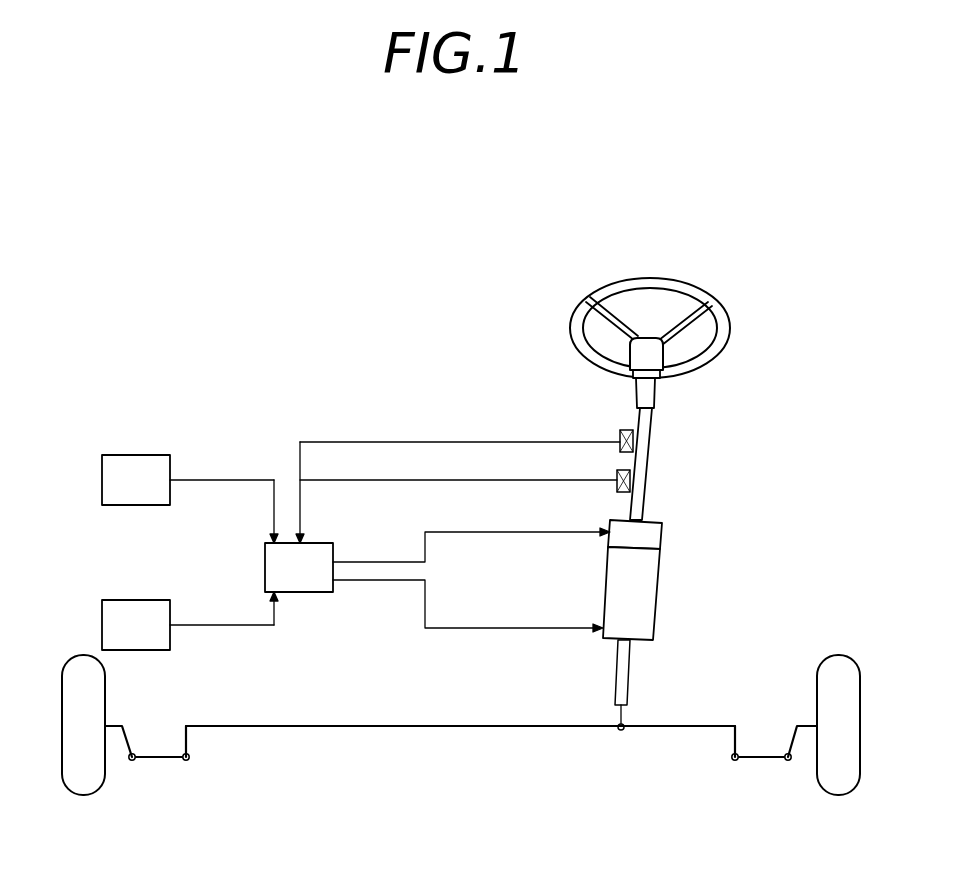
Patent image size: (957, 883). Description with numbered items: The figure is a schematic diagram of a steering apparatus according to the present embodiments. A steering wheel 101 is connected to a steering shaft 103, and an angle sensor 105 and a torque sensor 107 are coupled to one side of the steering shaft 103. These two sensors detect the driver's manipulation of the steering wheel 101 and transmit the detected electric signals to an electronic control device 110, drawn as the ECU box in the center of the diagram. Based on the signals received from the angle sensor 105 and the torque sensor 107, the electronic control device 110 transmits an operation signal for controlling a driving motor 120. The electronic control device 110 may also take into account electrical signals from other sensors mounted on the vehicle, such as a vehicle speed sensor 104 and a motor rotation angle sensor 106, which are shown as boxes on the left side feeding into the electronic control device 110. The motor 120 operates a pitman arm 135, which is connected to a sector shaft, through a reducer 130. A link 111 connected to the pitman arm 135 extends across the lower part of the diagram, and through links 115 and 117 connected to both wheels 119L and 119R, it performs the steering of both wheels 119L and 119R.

The steering wheel 101 is at (722, 335).
The steering shaft 103 is at (642, 463).
The vehicle speed sensor 104 is at (124, 455).
The angle sensor 105 is at (620, 435).
The motor rotation angle sensor 106 is at (136, 600).
The torque sensor 107 is at (617, 473).
The electronic control device 110 is at (265, 568).
The link 111 is at (437, 728).
The link 115 is at (147, 762).
The link 117 is at (133, 740).
The left wheel 119L is at (82, 787).
The right wheel 119R is at (830, 787).
The driving motor 120 is at (665, 535).
The reducer 130 is at (650, 617).
The pitman arm 135 is at (628, 683).